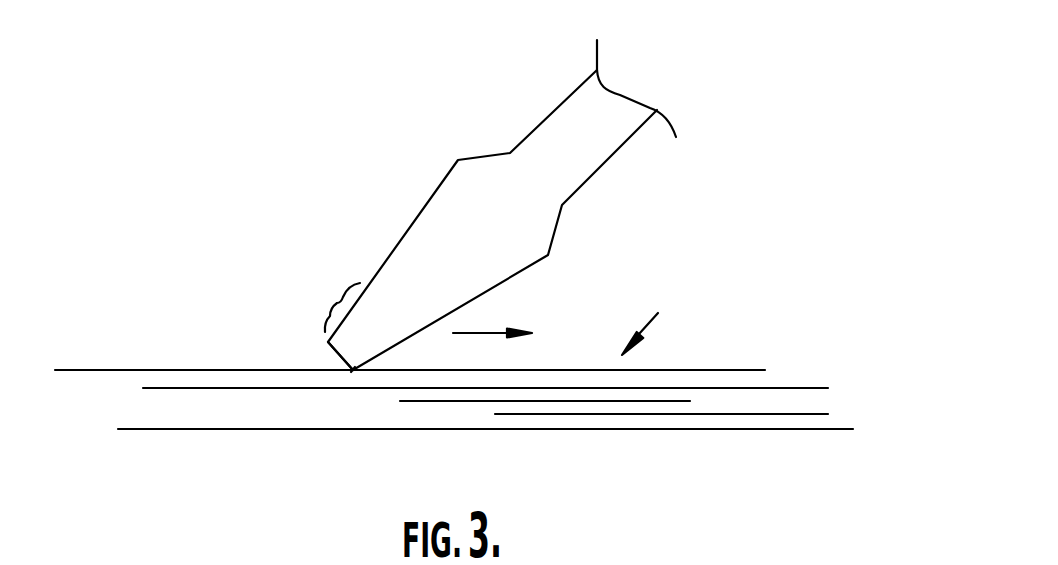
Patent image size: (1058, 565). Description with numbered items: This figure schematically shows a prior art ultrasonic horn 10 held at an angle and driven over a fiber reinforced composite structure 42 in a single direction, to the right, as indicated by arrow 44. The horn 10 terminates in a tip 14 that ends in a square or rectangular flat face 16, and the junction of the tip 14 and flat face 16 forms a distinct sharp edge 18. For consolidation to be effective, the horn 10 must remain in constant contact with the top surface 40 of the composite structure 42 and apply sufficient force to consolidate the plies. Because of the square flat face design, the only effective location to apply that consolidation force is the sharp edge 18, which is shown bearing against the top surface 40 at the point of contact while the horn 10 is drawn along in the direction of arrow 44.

The ultrasonic horn 10 is at (562, 102).
The tip 14 is at (335, 303).
The flat face 16 is at (337, 365).
The sharp edge 18 is at (355, 367).
The top surface 40 is at (648, 330).
The fiber reinforced composite structure 42 is at (852, 390).
The arrow 44 is at (495, 332).